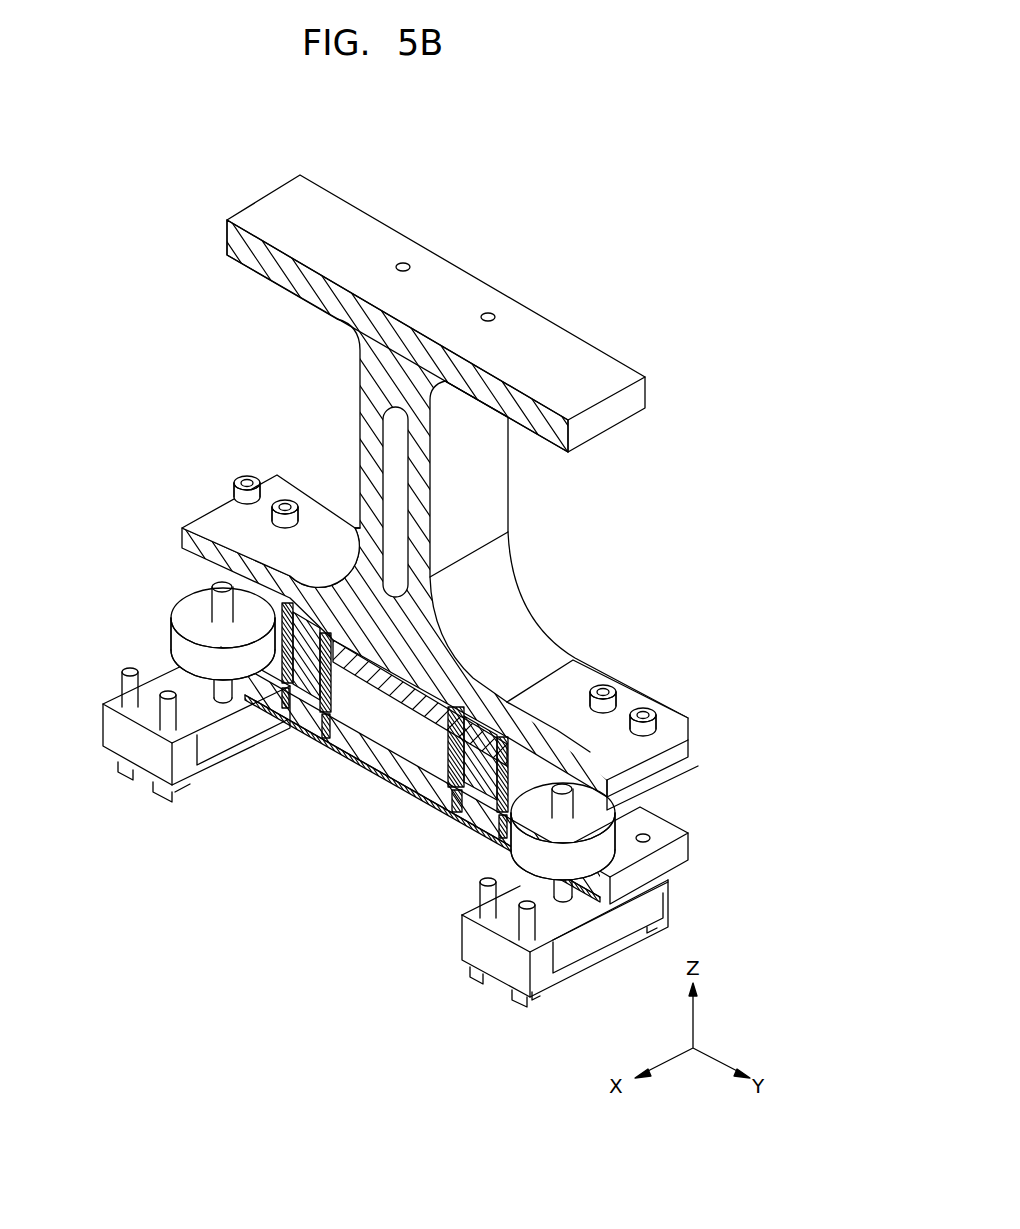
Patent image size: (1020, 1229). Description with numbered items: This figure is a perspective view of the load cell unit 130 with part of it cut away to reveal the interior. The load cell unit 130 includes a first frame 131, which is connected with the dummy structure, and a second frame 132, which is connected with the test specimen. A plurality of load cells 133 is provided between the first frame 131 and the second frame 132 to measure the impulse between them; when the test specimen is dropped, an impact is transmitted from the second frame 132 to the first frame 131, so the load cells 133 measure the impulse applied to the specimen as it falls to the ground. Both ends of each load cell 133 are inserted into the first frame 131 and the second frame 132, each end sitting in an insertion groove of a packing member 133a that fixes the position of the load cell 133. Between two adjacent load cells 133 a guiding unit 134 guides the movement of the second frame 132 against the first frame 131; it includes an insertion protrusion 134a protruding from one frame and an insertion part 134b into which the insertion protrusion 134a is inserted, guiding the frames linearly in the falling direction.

The load cell unit 130 is at (552, 258).
The first frame 131 is at (510, 602).
The second frame 132 is at (423, 781).
The load cell 133 is at (178, 637).
The packing member 133a is at (612, 788).
The guiding unit 134 is at (421, 750).
The insertion protrusion 134a is at (303, 717).
The insertion part 134b is at (325, 687).